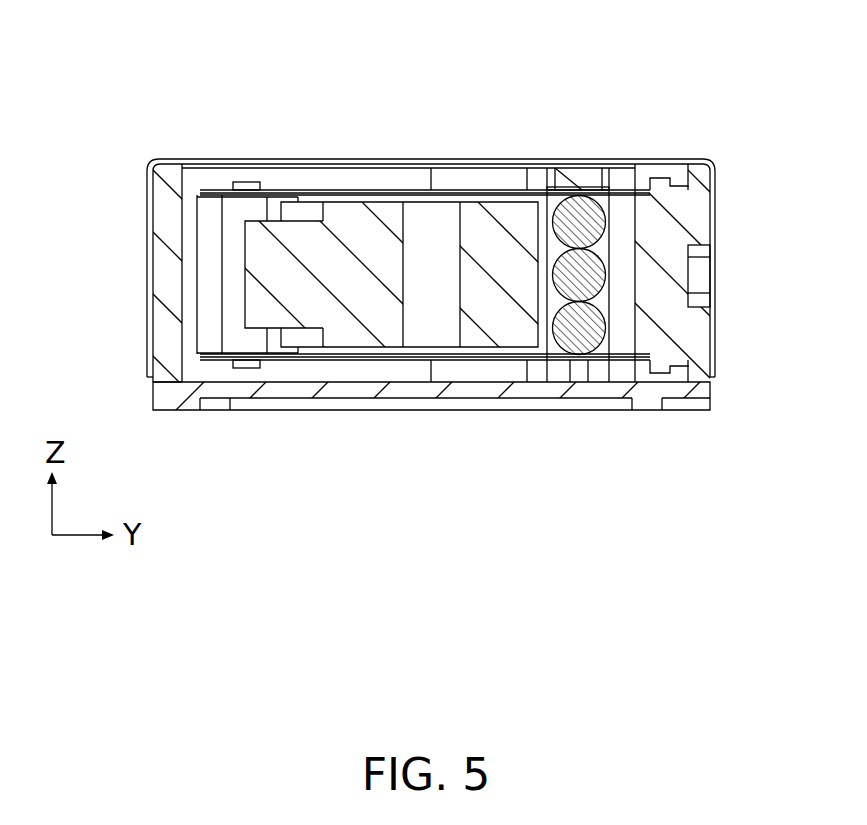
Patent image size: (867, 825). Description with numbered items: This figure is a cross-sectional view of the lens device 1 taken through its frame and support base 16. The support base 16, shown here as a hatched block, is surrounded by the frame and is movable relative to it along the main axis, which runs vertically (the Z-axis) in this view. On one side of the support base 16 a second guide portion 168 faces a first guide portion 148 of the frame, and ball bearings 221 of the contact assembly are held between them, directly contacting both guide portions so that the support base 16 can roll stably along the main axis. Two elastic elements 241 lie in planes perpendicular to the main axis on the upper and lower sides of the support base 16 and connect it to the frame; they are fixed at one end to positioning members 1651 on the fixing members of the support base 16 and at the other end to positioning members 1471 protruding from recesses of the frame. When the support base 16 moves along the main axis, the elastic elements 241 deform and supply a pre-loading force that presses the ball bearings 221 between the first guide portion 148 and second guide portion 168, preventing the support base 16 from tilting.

The lens device 1 is at (113, 60).
The positioning member 1651 is at (248, 184).
The support base 16 is at (353, 218).
The elastic element 241 is at (415, 192).
The ball bearing 221 is at (579, 218).
The second guide portion 168 is at (647, 197).
The positioning member 1471 is at (665, 178).
The first guide portion 148 is at (601, 370).